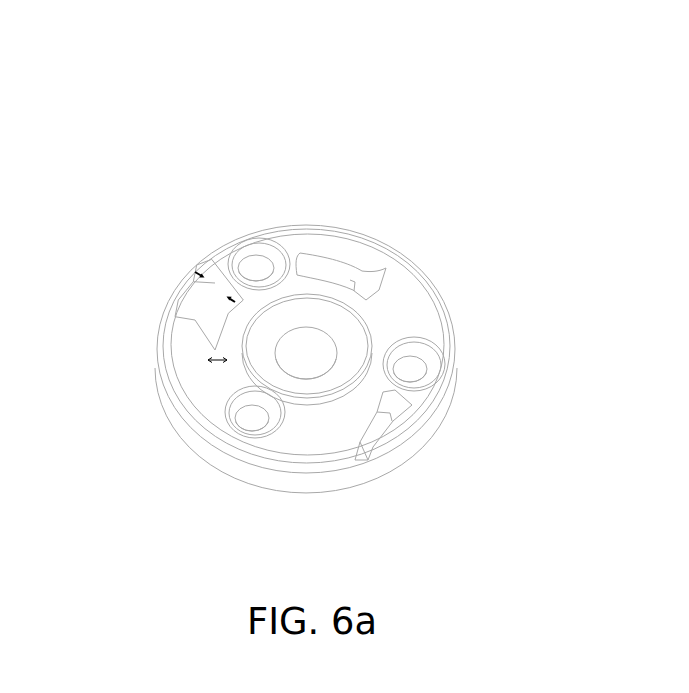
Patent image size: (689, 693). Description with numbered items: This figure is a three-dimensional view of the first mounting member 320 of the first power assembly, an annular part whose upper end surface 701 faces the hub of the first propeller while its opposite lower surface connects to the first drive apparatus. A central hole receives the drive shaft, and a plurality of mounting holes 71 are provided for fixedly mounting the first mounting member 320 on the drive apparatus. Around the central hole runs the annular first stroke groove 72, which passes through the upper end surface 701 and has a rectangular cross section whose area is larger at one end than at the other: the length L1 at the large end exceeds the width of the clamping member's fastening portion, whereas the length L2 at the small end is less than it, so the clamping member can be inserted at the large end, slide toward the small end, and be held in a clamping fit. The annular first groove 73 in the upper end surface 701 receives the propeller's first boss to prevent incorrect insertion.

The first mounting member 320 is at (347, 100).
The upper end surface 701 is at (215, 393).
The first groove 73 is at (315, 323).
The mounting holes 71 is at (412, 368).
The first stroke groove 72 is at (316, 445).
The length of the cross section at one end L1 is at (207, 262).
The length of the cross section of the other end L2 is at (195, 322).